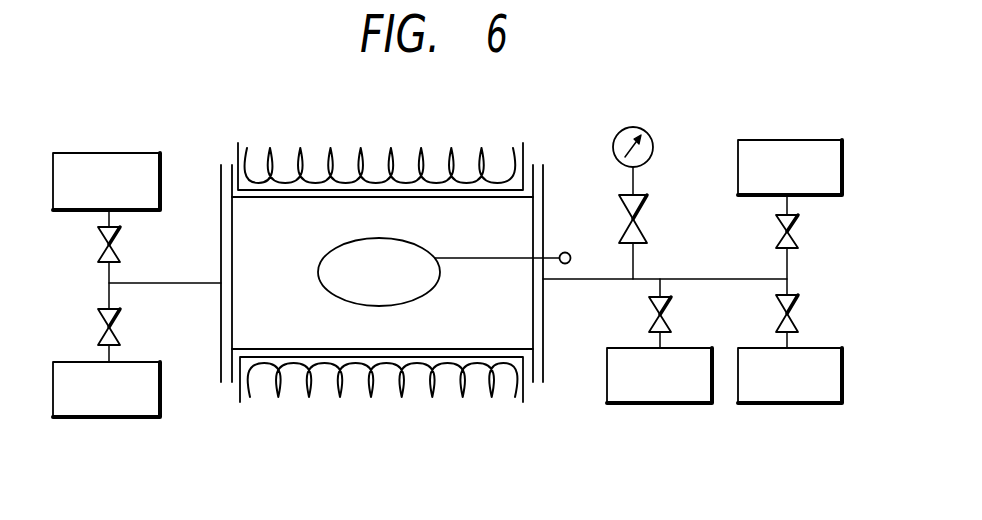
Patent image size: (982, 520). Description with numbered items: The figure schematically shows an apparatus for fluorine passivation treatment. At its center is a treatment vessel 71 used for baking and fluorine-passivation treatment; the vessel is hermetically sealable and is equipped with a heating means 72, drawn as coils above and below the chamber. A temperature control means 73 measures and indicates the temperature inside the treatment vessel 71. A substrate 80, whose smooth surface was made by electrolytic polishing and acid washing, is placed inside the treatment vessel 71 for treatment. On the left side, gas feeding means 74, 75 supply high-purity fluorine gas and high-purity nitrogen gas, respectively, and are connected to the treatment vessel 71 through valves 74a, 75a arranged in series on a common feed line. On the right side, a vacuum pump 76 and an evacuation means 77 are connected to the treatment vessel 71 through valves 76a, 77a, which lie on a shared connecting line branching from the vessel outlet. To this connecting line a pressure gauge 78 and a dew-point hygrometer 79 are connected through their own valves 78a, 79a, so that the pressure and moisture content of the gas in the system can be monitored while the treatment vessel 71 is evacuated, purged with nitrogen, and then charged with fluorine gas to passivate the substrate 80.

The treatment vessel 71 is at (537, 148).
The heating means 72 is at (359, 147).
The temperature control means 73 is at (567, 252).
The gas feeding means 74 is at (143, 152).
The valve 74a is at (118, 250).
The gas feeding means 75 is at (143, 418).
The valve 75a is at (118, 333).
The vacuum pump 76 is at (822, 406).
The valve 76a is at (796, 327).
The evacuation means 77 is at (820, 139).
The valve 77a is at (794, 243).
The pressure gauge 78 is at (640, 127).
The valve 78a is at (642, 232).
The dew-point hygrometer 79 is at (690, 406).
The valve 79a is at (668, 327).
The substrate 80 is at (318, 266).